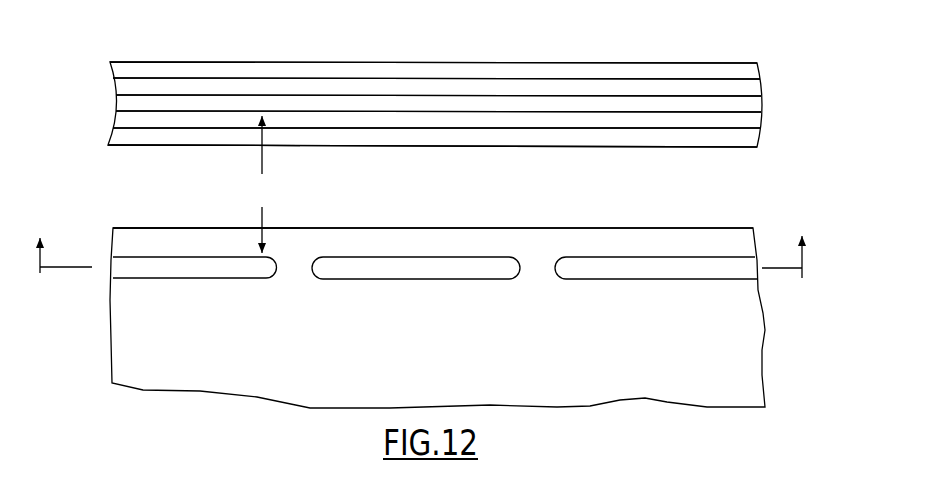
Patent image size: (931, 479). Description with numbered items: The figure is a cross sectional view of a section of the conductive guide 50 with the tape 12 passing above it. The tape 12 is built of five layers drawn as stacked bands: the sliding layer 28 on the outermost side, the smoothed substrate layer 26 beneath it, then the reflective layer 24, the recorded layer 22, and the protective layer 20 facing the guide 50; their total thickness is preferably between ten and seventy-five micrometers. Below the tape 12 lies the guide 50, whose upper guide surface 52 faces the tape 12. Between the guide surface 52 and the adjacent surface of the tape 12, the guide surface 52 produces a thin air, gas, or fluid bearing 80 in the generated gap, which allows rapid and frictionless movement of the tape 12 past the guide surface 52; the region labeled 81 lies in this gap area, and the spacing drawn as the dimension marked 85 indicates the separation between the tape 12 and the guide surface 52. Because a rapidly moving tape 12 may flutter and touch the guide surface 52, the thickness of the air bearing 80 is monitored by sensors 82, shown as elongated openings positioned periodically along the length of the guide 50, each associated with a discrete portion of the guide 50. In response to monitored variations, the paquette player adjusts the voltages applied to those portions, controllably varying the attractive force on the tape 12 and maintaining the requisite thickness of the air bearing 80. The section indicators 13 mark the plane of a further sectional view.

The tape 12 is at (728, 57).
The section line 13- 13 is at (420, 241).
The protective layer 20 is at (738, 138).
The recorded layer 22 is at (745, 122).
The reflective layer 24 is at (748, 102).
The smoothed substrate layer 26 is at (125, 88).
The sliding layer 28 is at (128, 70).
The guide 50 is at (806, 284).
The guide surface 52 is at (703, 228).
The air bearing 80 is at (133, 175).
The gap region 81 is at (142, 190).
The sensor 82 is at (403, 257).
The spacing dimension Vfm 85 is at (273, 182).